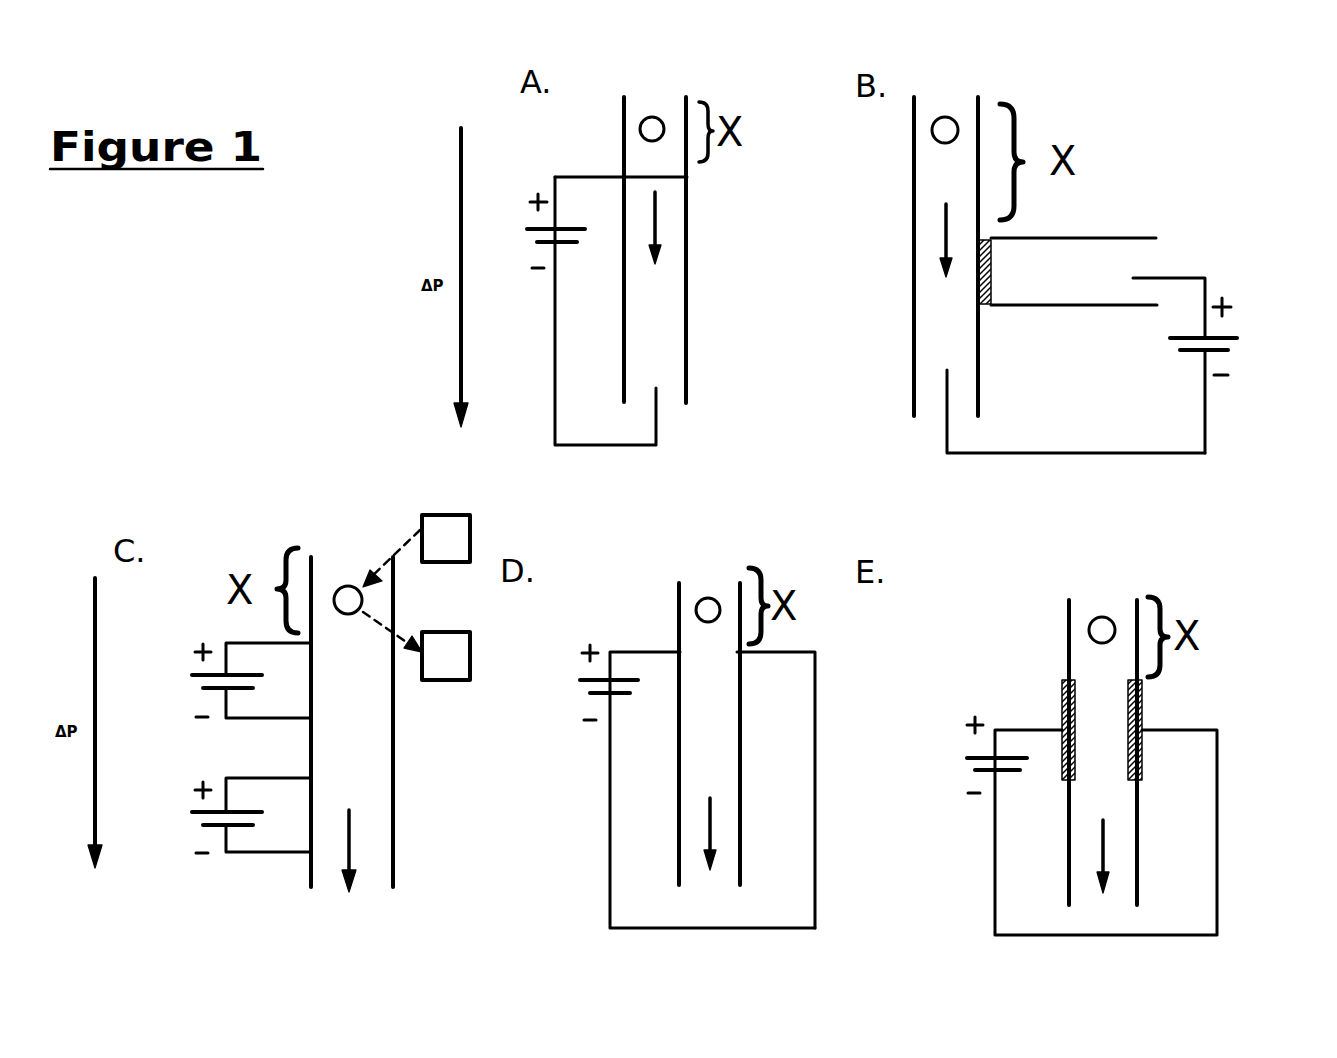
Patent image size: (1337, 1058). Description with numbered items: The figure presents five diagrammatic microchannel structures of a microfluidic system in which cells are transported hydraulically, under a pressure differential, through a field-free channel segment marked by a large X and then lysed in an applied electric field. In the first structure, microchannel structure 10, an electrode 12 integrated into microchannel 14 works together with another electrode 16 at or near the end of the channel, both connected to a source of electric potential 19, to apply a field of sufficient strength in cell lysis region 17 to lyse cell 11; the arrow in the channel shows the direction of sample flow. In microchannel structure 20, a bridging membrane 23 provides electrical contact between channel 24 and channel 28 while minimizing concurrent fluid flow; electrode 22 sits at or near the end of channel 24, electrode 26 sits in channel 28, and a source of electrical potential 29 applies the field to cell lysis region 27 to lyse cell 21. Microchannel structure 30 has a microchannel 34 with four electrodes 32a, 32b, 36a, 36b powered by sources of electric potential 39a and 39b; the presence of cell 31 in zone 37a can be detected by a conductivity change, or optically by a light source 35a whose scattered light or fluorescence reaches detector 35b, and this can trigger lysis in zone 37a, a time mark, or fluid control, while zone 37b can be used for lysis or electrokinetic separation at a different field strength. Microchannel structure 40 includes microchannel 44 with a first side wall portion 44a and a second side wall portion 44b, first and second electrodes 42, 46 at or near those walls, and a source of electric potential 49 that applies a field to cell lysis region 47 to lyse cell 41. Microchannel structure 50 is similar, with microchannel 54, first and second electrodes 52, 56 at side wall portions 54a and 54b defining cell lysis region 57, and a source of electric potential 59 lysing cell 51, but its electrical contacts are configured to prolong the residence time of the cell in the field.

The microchannel structure 10 is at (715, 313).
The cell 11 is at (652, 112).
The electrode 12 is at (691, 178).
The microchannel 14 is at (688, 223).
The electrode 16 is at (655, 410).
The cell lysis region 17 is at (667, 346).
The source of electric potential 19 is at (515, 252).
The microchannel structure 20 is at (889, 334).
The cell 21 is at (942, 104).
The electrode 22 is at (955, 423).
The bridging membrane 23 is at (983, 305).
The channel 24 is at (912, 216).
The electrode 26 is at (1167, 272).
The cell lysis region 27 is at (945, 328).
The channel 28 is at (1087, 239).
The source of electrical potential 29 is at (1240, 352).
The microchannel structure 30 is at (421, 776).
The cell 31 is at (343, 583).
The electrode 32a is at (259, 652).
The electrode 32b is at (251, 699).
The microchannel 34 is at (310, 748).
The light source 35a is at (433, 506).
The detector 35b is at (469, 615).
The electrode 36a is at (257, 789).
The electrode 36b is at (252, 835).
The zone 37a is at (375, 671).
The zone 37b is at (389, 808).
The source of electric potential 39a is at (192, 677).
The source of electric potential 39b is at (191, 812).
The microchannel structure 40 is at (754, 791).
The cell 41 is at (703, 597).
The first electrode 42 is at (672, 660).
The microchannel 44 is at (678, 783).
The first side wall portion 44a is at (683, 657).
The second side wall portion 44b is at (735, 657).
The second electrode 46 is at (762, 648).
The cell lysis region 47 is at (711, 631).
The source of electric potential 49 is at (580, 697).
The microchannel structure 50 is at (1058, 833).
The cell 51 is at (1107, 617).
The first electrode 52 is at (1062, 712).
The microchannel 54 is at (1140, 817).
The first side wall portion 54a is at (1076, 755).
The second side wall portion 54b is at (1131, 778).
The second electrode 56 is at (1142, 705).
The cell lysis region 57 is at (1110, 698).
The source of electric potential 59 is at (959, 770).